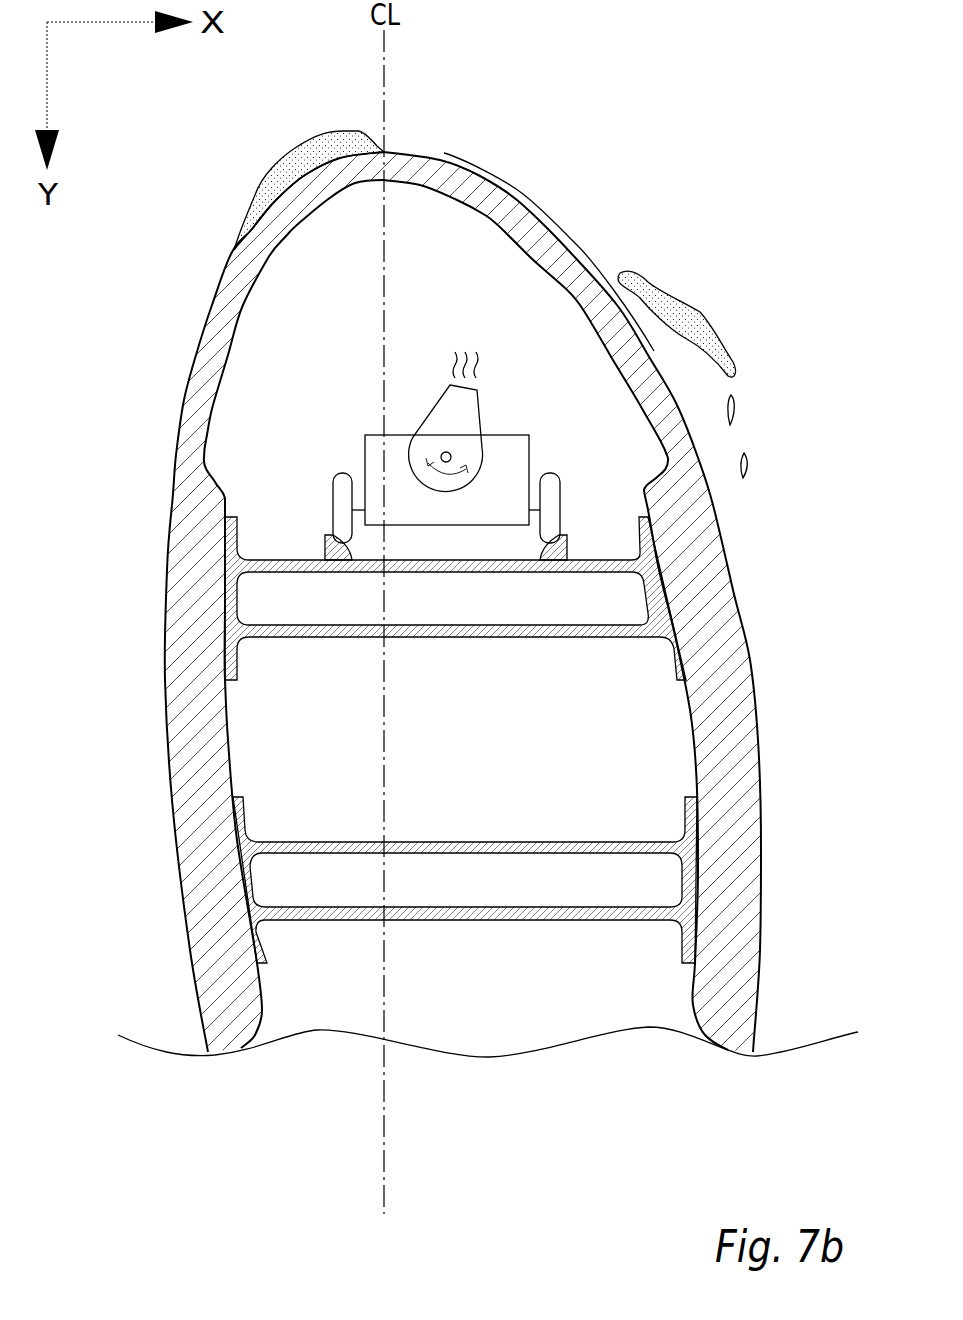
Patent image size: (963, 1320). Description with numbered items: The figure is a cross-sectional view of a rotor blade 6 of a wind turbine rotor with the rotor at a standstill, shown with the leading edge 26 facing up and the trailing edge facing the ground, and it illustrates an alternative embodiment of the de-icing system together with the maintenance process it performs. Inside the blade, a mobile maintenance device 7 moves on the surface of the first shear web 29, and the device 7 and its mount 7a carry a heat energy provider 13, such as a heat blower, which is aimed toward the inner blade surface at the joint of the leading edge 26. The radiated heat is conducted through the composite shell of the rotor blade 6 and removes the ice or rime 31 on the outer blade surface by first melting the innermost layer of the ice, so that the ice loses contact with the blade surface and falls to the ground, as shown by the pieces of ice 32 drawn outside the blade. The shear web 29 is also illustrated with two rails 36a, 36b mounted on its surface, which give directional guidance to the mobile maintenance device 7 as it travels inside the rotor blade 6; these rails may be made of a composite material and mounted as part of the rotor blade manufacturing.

The rotor blade 6 is at (675, 143).
The mobile maintenance device 7 is at (395, 434).
The housing mount 7a is at (338, 478).
The heat energy provider 13 is at (480, 408).
The leading edge 26 is at (385, 152).
The first shear web 29 is at (275, 558).
The ice or rime 31 is at (246, 219).
The pieces of ice 32 is at (738, 366).
The rail 36a is at (337, 548).
The rail 36b is at (560, 540).